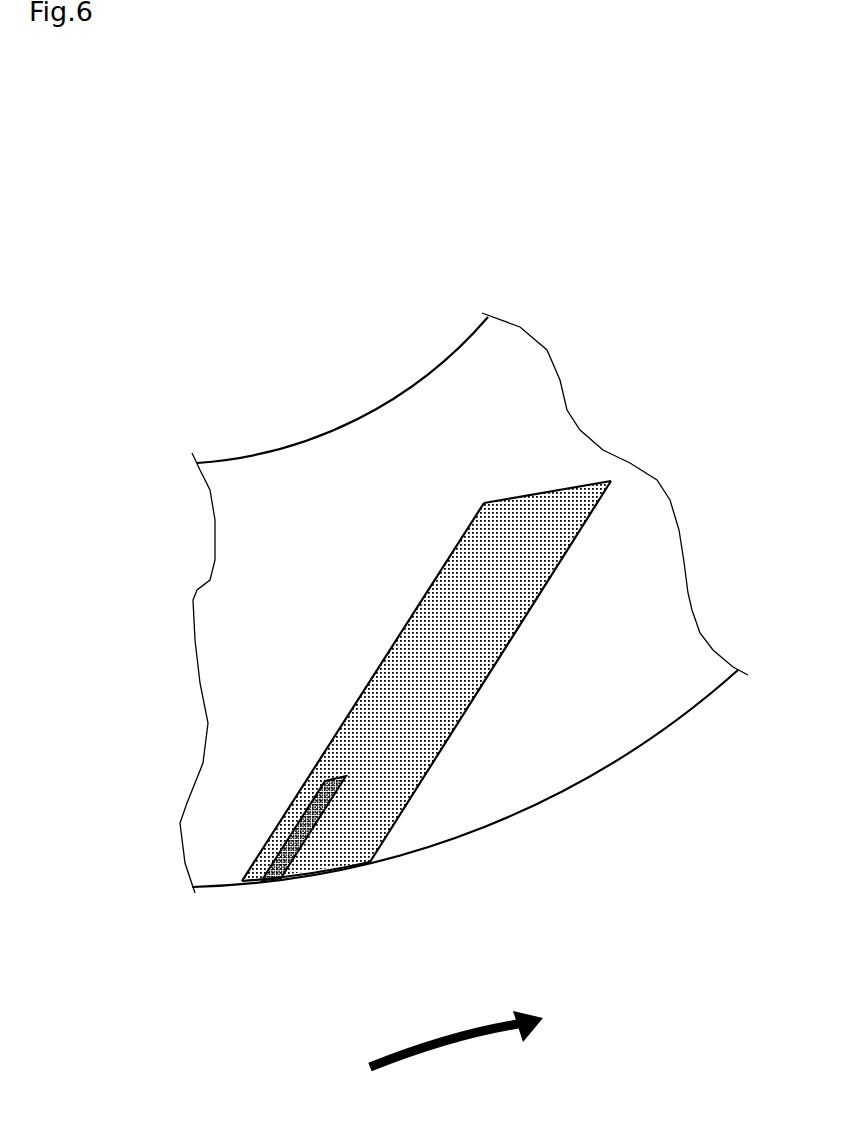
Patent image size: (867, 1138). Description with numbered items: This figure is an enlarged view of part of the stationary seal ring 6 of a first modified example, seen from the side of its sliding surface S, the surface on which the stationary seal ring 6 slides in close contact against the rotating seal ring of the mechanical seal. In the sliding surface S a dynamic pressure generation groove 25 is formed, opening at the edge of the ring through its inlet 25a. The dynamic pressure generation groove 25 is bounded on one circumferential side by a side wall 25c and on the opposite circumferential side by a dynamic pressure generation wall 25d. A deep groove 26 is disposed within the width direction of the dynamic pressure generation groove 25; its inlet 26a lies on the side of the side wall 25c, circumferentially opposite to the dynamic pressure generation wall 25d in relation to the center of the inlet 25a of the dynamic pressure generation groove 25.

The stationary seal ring 6 is at (487, 603).
The sliding surface S is at (612, 747).
The dynamic pressure generation groove 25 is at (433, 744).
The inlet of dynamic pressure generation groove 25a is at (328, 876).
The side wall 25c is at (425, 587).
The dynamic pressure generation wall 25d is at (485, 686).
The deep groove 26 is at (411, 891).
The inlet of deep groove 26a is at (268, 883).